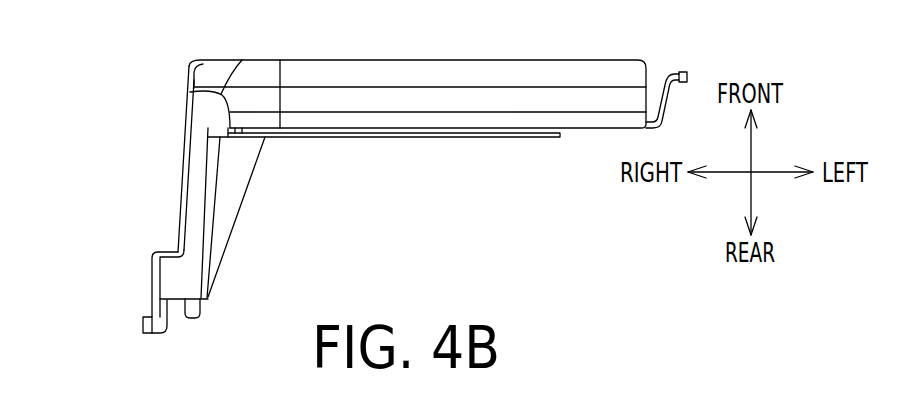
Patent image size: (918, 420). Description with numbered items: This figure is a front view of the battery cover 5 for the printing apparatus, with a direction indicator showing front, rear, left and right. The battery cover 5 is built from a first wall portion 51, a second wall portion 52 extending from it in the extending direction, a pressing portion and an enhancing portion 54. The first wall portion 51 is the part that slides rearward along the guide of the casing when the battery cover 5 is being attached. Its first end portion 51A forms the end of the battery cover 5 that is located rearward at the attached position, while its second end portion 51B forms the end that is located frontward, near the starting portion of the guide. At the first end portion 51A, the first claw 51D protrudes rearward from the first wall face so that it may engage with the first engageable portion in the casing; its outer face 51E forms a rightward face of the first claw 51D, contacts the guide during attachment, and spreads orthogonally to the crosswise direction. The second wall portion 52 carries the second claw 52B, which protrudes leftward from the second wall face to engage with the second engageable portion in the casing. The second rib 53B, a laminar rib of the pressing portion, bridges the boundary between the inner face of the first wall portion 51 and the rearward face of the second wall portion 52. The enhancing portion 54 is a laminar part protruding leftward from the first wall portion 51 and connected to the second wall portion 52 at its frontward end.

The battery cover 5 is at (150, 73).
The first wall portion 51 is at (193, 203).
The first end portion 51A is at (146, 273).
The second end portion 51B is at (181, 92).
The first claw 51D is at (163, 323).
The outer face 51E is at (137, 324).
The second wall portion 52 is at (372, 73).
The second claw 52B is at (683, 72).
The second rib 53B is at (190, 318).
The enhancing portion 54 is at (237, 156).